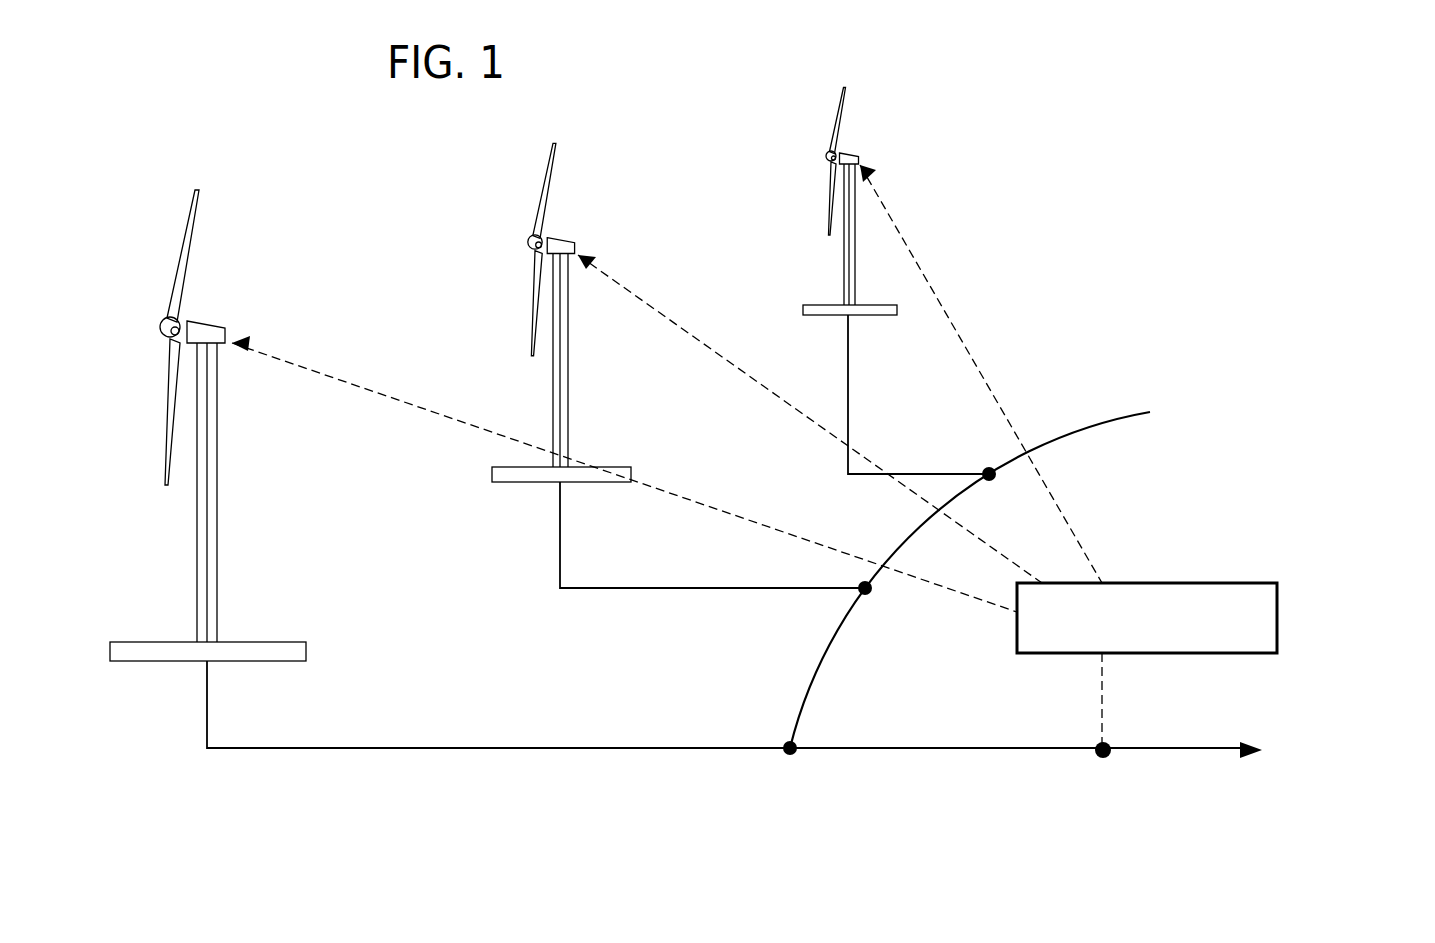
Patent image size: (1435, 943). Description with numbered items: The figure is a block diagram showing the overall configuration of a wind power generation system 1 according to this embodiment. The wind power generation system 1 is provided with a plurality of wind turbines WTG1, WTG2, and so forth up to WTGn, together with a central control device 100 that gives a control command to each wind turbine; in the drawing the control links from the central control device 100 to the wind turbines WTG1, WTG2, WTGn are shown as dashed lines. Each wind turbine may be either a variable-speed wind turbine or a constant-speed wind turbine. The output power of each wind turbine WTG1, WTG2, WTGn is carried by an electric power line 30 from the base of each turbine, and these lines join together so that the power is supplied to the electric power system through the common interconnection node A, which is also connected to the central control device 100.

The wind power generation system 1 is at (1212, 140).
The electric power line 30 is at (401, 747).
The central control device 100 is at (1278, 618).
The wind turbine WTG1 is at (264, 245).
The wind turbine WTG2 is at (612, 174).
The wind turbine WTGn is at (940, 132).
The interconnection node A is at (1106, 760).